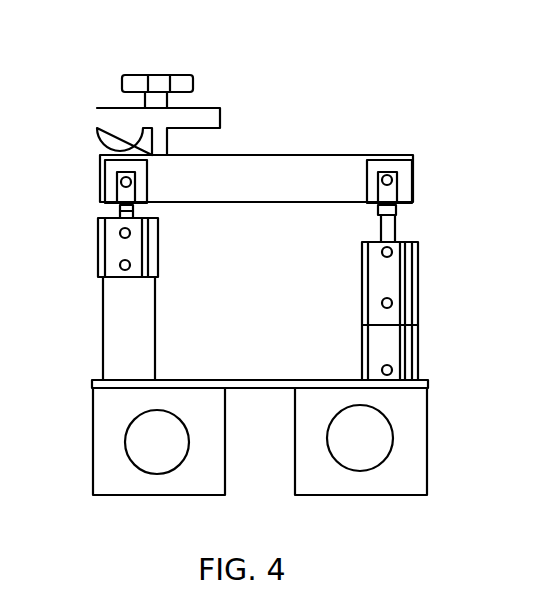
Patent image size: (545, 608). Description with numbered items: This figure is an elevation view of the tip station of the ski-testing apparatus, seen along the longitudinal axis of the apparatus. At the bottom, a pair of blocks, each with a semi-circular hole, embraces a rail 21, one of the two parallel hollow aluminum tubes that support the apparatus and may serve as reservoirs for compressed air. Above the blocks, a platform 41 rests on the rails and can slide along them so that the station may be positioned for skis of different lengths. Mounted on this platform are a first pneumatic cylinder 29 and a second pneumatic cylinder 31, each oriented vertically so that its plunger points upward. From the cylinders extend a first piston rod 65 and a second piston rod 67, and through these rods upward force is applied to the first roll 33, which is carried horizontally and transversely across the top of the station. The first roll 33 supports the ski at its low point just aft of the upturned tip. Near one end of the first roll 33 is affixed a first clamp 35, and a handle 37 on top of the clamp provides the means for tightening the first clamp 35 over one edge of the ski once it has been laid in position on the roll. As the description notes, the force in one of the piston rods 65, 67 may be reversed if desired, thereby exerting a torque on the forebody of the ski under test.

The rail 21 is at (380, 441).
The first pneumatic cylinder 29 is at (418, 292).
The second pneumatic cylinder 31 is at (103, 335).
The first roll 33 is at (263, 155).
The first clamp 35 is at (97, 112).
The handle 37 is at (158, 75).
The second platform 41 is at (228, 381).
The first piston rod 65 is at (115, 207).
The second piston rod 67 is at (397, 226).